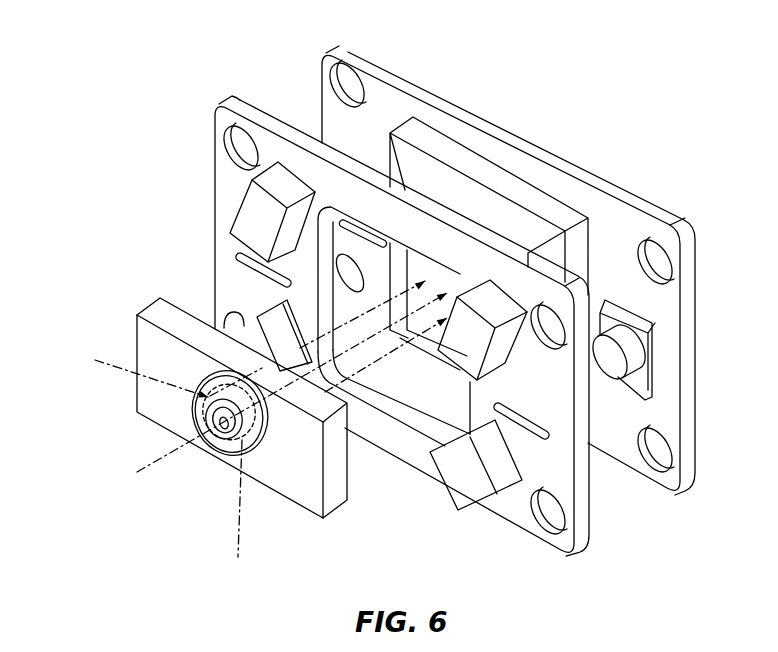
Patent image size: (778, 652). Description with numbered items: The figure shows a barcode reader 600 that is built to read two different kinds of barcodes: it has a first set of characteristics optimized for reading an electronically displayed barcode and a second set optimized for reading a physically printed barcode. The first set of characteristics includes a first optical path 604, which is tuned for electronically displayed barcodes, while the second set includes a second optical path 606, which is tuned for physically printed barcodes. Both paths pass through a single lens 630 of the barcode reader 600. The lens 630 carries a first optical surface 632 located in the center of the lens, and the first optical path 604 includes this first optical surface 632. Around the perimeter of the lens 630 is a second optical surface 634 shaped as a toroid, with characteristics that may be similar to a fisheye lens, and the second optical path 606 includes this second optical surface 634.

The barcode reader 600 is at (150, 129).
The first optical path 604 is at (352, 347).
The second optical path 606 is at (397, 347).
The lens 630 is at (190, 411).
The first optical surface 632 is at (228, 435).
The second optical surface 634 is at (253, 430).